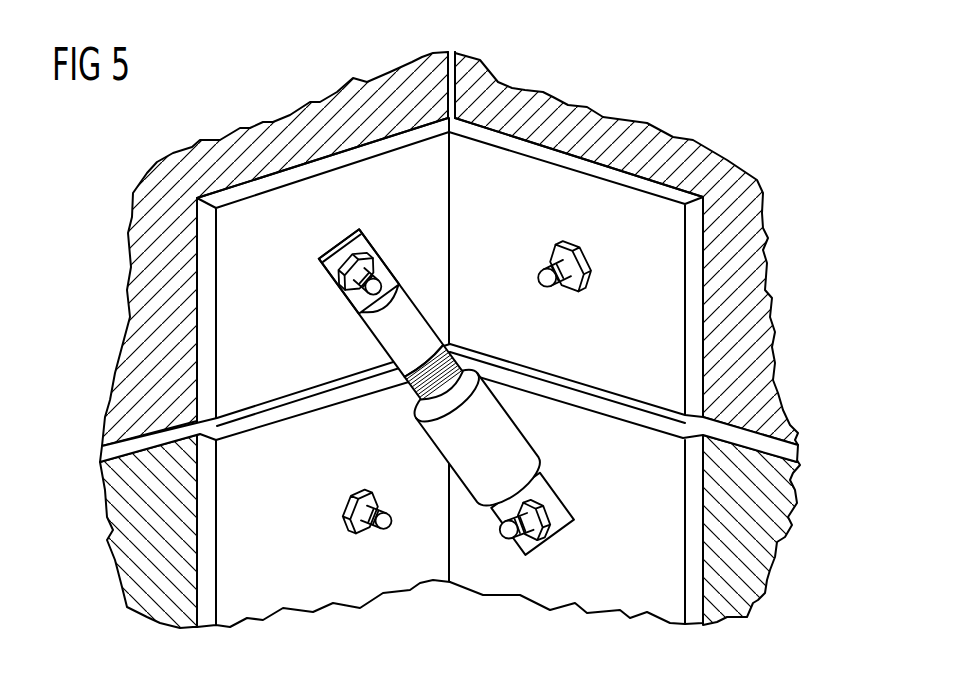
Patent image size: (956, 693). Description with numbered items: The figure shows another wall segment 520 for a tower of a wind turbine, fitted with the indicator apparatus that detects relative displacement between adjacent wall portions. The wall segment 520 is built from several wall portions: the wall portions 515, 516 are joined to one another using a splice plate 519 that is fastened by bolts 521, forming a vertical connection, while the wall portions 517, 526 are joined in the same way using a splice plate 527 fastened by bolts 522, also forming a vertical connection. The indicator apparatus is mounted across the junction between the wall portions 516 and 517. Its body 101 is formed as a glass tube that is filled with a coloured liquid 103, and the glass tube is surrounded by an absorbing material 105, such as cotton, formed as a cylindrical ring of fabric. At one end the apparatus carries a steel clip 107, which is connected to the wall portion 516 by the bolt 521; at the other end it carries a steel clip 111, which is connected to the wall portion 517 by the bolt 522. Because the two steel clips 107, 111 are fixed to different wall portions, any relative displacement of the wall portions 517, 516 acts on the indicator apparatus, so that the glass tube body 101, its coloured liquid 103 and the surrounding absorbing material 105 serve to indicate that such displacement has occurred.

The wall segment 520 is at (445, 339).
The wall portion 516 is at (137, 247).
The wall portion 526 is at (120, 534).
The wall portion 515 is at (761, 254).
The wall portion 517 is at (768, 556).
The splice plate 519 is at (650, 367).
The splice plate 527 is at (647, 593).
The body 101 is at (385, 334).
The coloured liquid 103 is at (425, 394).
The absorbing material 105 is at (443, 447).
The steel clip 107 is at (340, 254).
The steel clip 111 is at (560, 520).
The bolt 521 is at (586, 270).
The bolt 522 is at (342, 508).